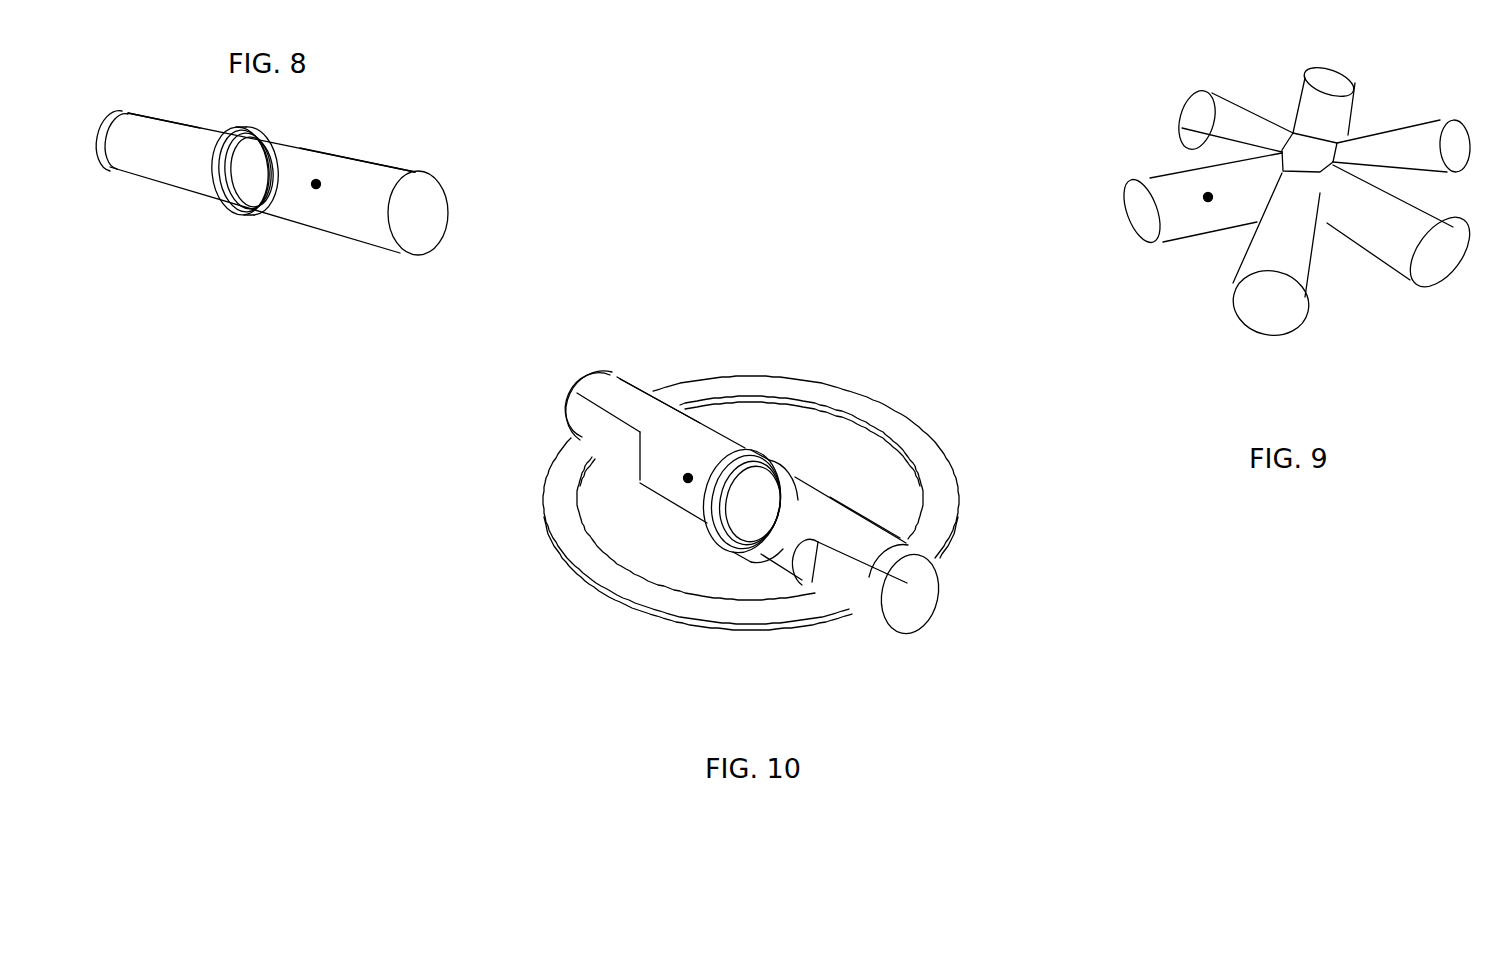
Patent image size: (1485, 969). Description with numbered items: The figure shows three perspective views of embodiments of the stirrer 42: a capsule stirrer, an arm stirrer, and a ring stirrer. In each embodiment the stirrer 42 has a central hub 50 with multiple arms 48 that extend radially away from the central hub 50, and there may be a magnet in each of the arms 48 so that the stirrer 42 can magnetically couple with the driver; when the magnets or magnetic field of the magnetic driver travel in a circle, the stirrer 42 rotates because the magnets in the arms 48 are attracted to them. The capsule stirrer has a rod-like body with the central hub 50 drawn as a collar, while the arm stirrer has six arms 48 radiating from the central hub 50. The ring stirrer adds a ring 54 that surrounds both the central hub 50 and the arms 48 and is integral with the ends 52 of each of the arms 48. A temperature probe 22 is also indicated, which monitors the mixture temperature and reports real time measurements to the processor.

In FIG. 8, the temperature probe 22 is at (315, 195).
In FIG. 9, the temperature probe 22 is at (1208, 197).
In FIG. 10, the temperature probe 22 is at (682, 477).
In FIG. 8, the stirrer 42 is at (440, 156).
In FIG. 9, the stirrer 42 is at (1347, 284).
In FIG. 10, the stirrer 42 is at (704, 292).
In FIG. 8, the arms 48 is at (132, 152).
In FIG. 9, the arms 48 is at (1290, 213).
In FIG. 10, the arms 48 is at (620, 388).
In FIG. 8, the central hub 50 is at (228, 168).
In FIG. 9, the central hub 50 is at (1313, 150).
In FIG. 10, the central hub 50 is at (730, 475).
In FIG. 10, the ends of the arms 52 is at (592, 382).
In FIG. 10, the ring 54 is at (623, 590).